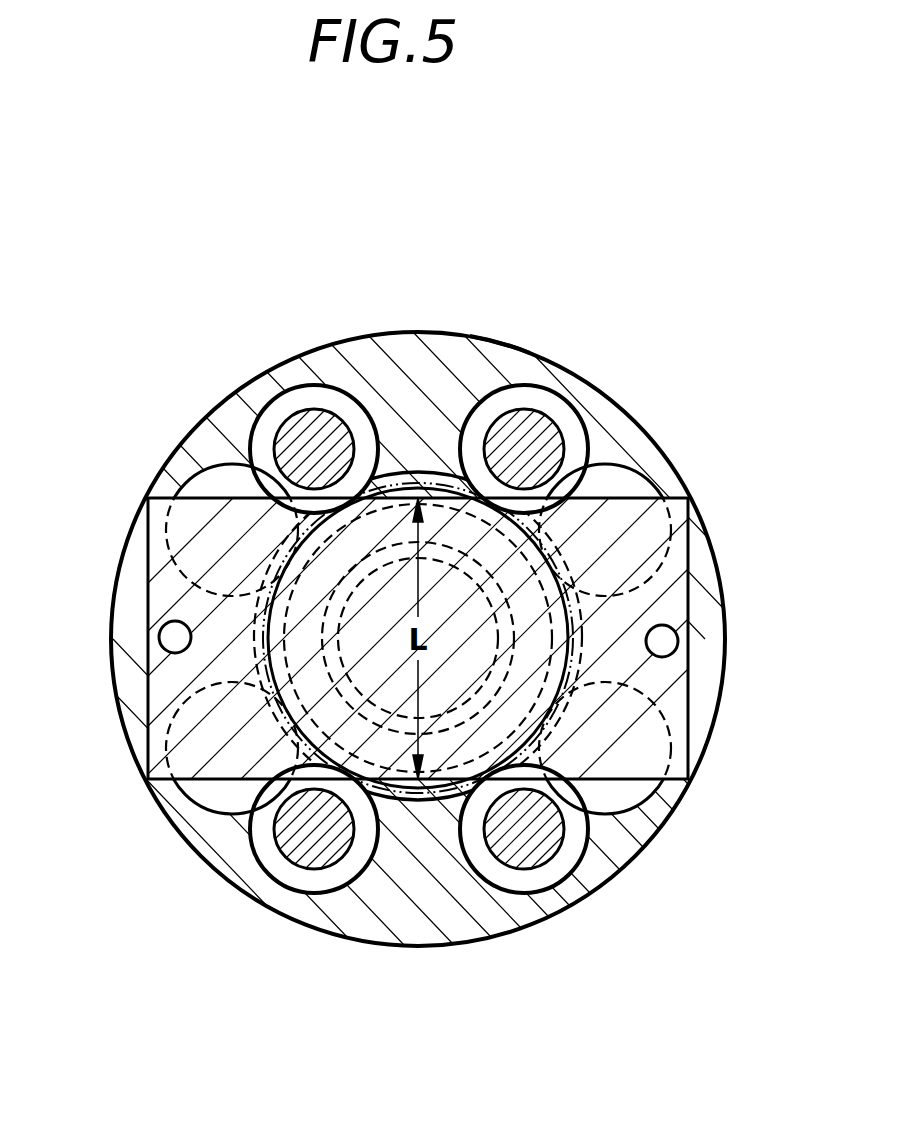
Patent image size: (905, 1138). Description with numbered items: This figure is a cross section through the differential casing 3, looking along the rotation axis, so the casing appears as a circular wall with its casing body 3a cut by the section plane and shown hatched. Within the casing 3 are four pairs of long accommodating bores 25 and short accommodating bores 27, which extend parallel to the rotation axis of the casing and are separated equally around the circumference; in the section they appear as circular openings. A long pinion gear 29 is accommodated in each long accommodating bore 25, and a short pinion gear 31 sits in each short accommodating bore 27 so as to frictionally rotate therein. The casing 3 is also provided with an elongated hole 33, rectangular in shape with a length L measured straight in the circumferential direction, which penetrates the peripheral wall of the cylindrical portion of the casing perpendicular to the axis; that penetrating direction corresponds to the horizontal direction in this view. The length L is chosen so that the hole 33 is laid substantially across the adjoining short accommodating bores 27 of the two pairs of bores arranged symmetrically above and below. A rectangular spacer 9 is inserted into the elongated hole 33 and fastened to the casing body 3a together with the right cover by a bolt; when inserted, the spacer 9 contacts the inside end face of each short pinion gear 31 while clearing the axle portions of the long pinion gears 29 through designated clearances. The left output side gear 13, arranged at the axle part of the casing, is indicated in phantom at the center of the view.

The differential casing 3 is at (405, 326).
The casing body 3a is at (500, 342).
The spacer 9 is at (688, 687).
The left output side gear 13 is at (419, 477).
The long accommodating bores 25 is at (290, 407).
The short accommodating bores 27 is at (185, 472).
The long pinion gear 29 is at (320, 427).
The short pinion gear 31 is at (233, 477).
The elongated hole 33 is at (130, 608).